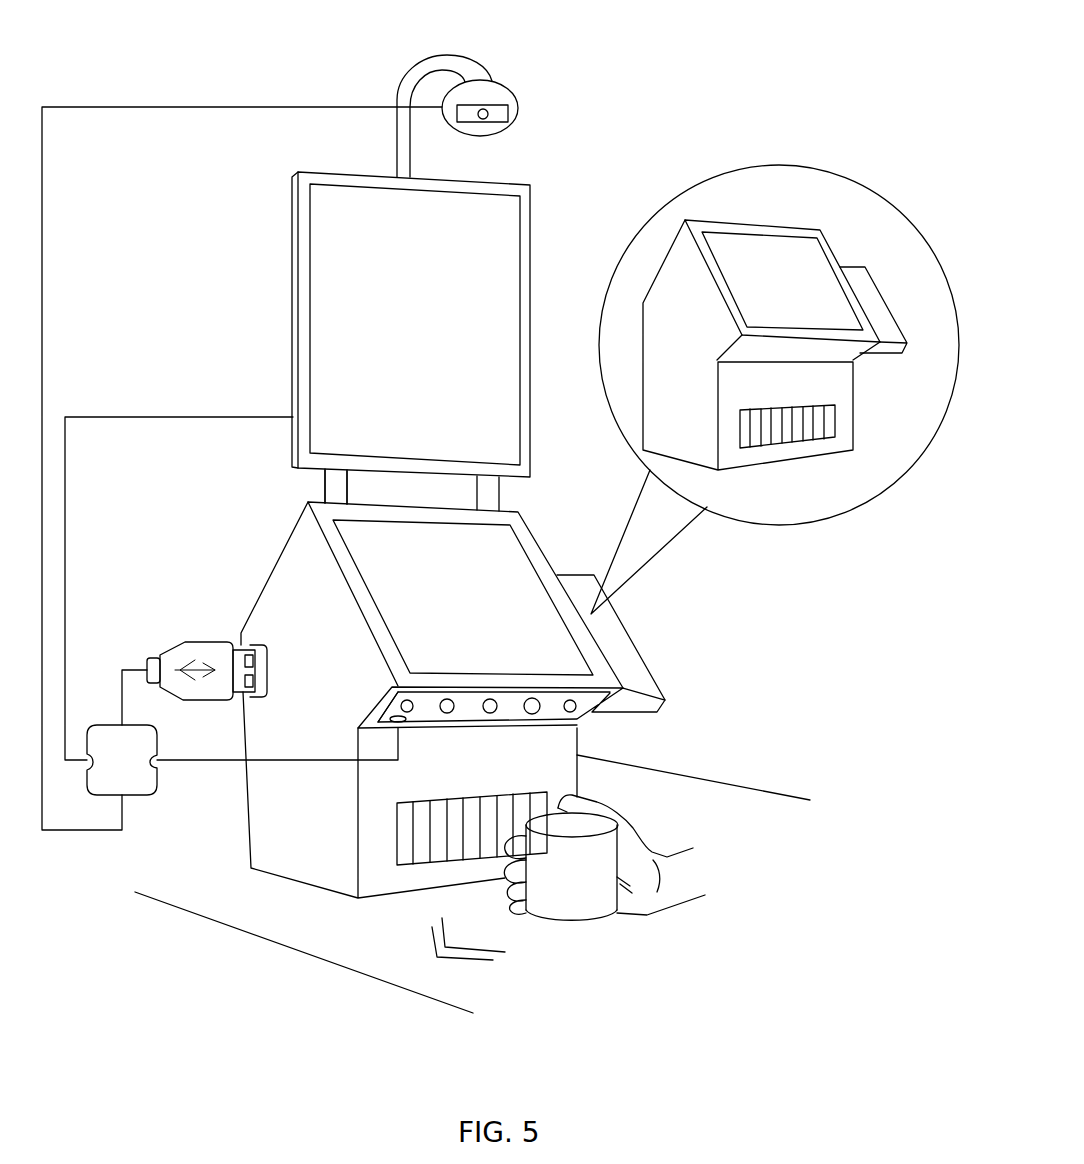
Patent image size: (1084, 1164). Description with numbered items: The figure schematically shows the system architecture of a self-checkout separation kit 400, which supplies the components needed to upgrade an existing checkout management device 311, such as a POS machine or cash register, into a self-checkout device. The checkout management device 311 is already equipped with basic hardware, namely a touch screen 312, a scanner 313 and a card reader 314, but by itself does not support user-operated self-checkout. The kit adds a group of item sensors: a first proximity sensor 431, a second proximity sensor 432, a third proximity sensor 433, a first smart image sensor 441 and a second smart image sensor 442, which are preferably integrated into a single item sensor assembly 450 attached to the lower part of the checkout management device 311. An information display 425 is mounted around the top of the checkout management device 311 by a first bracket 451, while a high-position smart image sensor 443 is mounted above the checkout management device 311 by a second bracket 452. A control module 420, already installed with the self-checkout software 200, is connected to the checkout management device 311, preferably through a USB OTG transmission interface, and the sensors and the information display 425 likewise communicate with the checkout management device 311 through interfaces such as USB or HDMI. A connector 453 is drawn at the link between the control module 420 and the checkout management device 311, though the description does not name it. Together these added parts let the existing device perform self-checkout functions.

The self-checkout separation kit 400 is at (228, 254).
The information display 425 is at (411, 341).
The second bracket 452 is at (430, 57).
The high-position smart image sensor 443 is at (508, 86).
The first bracket 451 is at (324, 495).
The checkout management device 311 is at (560, 559).
The touch screen 312 is at (528, 552).
The scanner 313 is at (397, 825).
The card reader 314 is at (628, 628).
The first proximity sensor 431 is at (570, 699).
The second proximity sensor 432 is at (490, 698).
The third proximity sensor 433 is at (408, 699).
The first smart image sensor 441 is at (532, 697).
The second smart image sensor 442 is at (448, 698).
The item sensor assembly 450 is at (388, 713).
The USB connector 453 is at (195, 642).
The control module 420 is at (122, 760).
The self-checkout software 200 is at (122, 760).